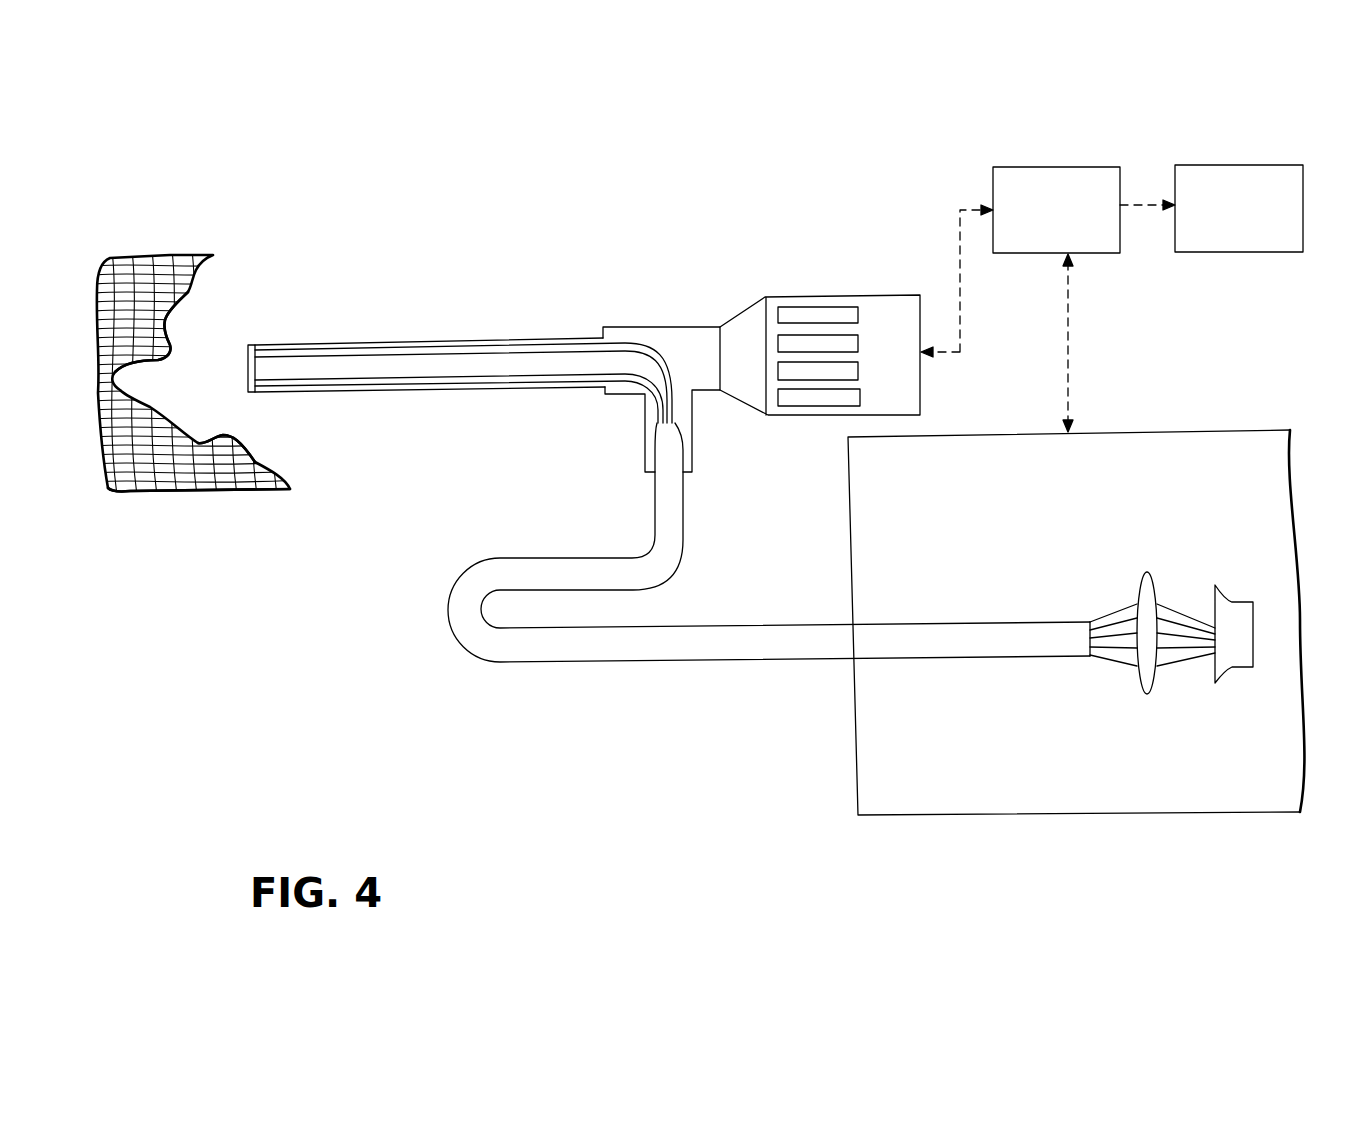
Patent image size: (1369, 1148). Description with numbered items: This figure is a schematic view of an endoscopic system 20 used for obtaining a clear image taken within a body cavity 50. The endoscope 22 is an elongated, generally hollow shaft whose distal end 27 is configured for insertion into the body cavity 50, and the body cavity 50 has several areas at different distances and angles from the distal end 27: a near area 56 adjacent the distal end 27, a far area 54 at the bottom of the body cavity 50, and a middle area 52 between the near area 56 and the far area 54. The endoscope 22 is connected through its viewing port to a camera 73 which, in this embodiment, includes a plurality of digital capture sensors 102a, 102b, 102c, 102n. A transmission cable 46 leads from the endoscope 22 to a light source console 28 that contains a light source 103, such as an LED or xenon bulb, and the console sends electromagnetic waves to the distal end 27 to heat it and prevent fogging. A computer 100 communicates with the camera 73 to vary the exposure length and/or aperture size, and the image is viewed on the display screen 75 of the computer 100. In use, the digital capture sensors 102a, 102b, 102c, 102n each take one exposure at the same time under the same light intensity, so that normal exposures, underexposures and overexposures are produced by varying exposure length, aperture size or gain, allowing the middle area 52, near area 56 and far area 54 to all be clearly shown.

The endoscopic system 20 is at (625, 217).
The endoscope 22 is at (453, 325).
The distal end 27 is at (250, 343).
The light source console 28 is at (1118, 430).
The transmission cable 46 is at (640, 668).
The body cavity 50 is at (143, 258).
The middle area 52 is at (160, 360).
The far area 54 is at (170, 496).
The near area 56 is at (215, 437).
The camera 73 is at (838, 295).
The display screen 75 is at (1218, 165).
The computer 100 is at (1048, 167).
The digital capture sensor 102a is at (790, 306).
The digital capture sensor 102b is at (778, 345).
The digital capture sensor 102c is at (778, 371).
The digital capture sensor 102n is at (808, 407).
The light source 103 is at (1245, 590).